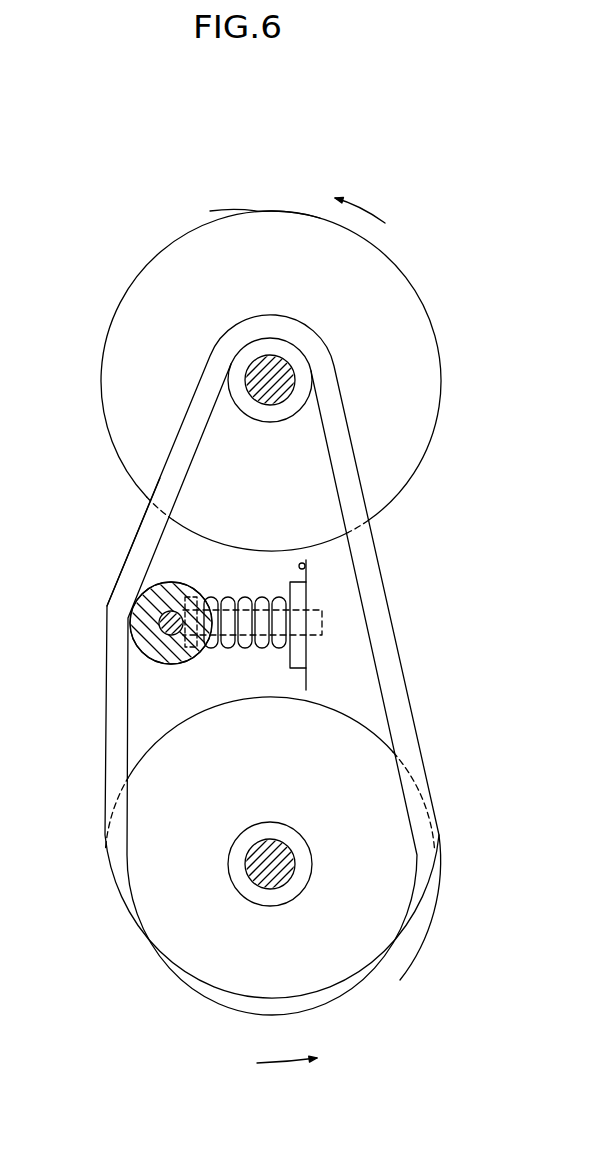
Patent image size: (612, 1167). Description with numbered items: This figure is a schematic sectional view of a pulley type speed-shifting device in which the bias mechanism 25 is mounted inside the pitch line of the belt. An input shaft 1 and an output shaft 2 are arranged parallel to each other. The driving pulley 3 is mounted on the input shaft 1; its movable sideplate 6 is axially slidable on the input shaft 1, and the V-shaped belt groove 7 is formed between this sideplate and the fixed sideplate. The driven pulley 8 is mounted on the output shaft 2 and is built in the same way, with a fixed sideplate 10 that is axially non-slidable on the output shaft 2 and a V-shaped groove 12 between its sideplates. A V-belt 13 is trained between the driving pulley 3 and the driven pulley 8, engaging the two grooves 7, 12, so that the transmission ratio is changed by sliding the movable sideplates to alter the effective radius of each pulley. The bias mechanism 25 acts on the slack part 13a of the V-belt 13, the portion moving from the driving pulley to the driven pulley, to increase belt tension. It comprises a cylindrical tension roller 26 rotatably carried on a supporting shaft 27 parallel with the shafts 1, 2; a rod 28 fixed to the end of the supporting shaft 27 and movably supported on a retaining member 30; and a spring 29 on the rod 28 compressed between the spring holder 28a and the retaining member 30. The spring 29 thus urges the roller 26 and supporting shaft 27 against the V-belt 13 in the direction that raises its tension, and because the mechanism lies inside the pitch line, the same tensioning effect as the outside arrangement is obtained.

The input shaft 1 is at (252, 365).
The output shaft 2 is at (292, 890).
The driving pulley 3 is at (112, 322).
The movable sideplate 6 is at (233, 211).
The V-shaped belt groove 7 is at (280, 220).
The driven pulley 8 is at (441, 848).
The fixed sideplate 10 is at (370, 727).
The V-shaped groove 12 is at (402, 893).
The V-belt 13 is at (393, 621).
The slack part 13a is at (137, 533).
The bias mechanism 25 is at (148, 582).
The tension roller 26 is at (153, 663).
The supporting shaft 27 is at (176, 630).
The rod 28 is at (268, 608).
The spring holder 28a is at (184, 596).
The spring 29 is at (222, 597).
The retaining member 30 is at (307, 565).